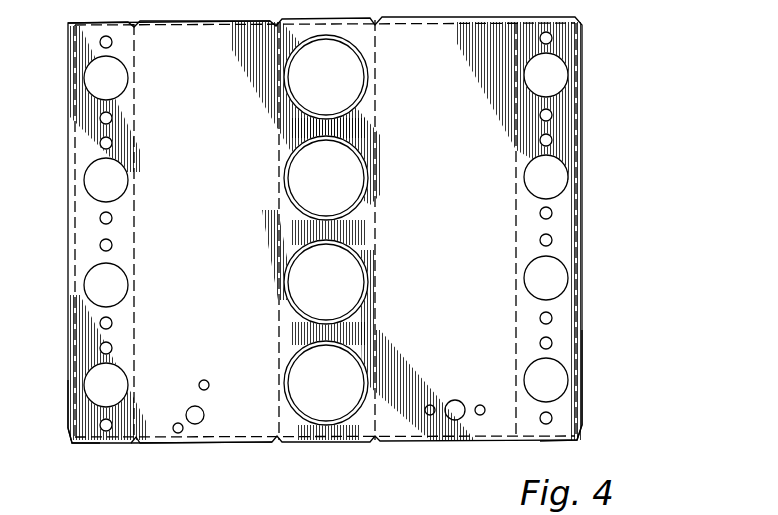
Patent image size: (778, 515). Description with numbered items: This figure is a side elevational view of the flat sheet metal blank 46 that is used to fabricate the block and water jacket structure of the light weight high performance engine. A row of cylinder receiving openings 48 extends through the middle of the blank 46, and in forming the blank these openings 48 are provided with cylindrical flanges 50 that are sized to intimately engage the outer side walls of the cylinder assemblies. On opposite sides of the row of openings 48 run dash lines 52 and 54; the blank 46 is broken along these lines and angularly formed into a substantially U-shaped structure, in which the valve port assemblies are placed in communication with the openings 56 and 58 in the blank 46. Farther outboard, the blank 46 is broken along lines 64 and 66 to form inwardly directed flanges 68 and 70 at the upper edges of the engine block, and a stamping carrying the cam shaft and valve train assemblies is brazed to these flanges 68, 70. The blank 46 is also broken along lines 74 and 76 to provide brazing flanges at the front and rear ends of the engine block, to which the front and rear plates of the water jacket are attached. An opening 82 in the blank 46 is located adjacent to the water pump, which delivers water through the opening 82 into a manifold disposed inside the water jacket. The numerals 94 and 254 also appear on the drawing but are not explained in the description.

The blank 46 is at (449, 34).
The cylinder receiving openings 48 is at (355, 58).
The cylindrical flanges 50 is at (345, 110).
The dash line 52 is at (378, 225).
The dash line 54 is at (278, 210).
The openings 56 is at (114, 80).
The openings 58 is at (560, 76).
The line 64 is at (68, 418).
The line 66 is at (583, 380).
The inwardly directed flange 68 is at (70, 440).
The inwardly directed flange 70 is at (584, 414).
The line 74 is at (219, 22).
The line 76 is at (258, 447).
The opening 82 is at (188, 412).
The mounting hole 94 is at (450, 388).
The partial numeral 254 is at (260, 514).